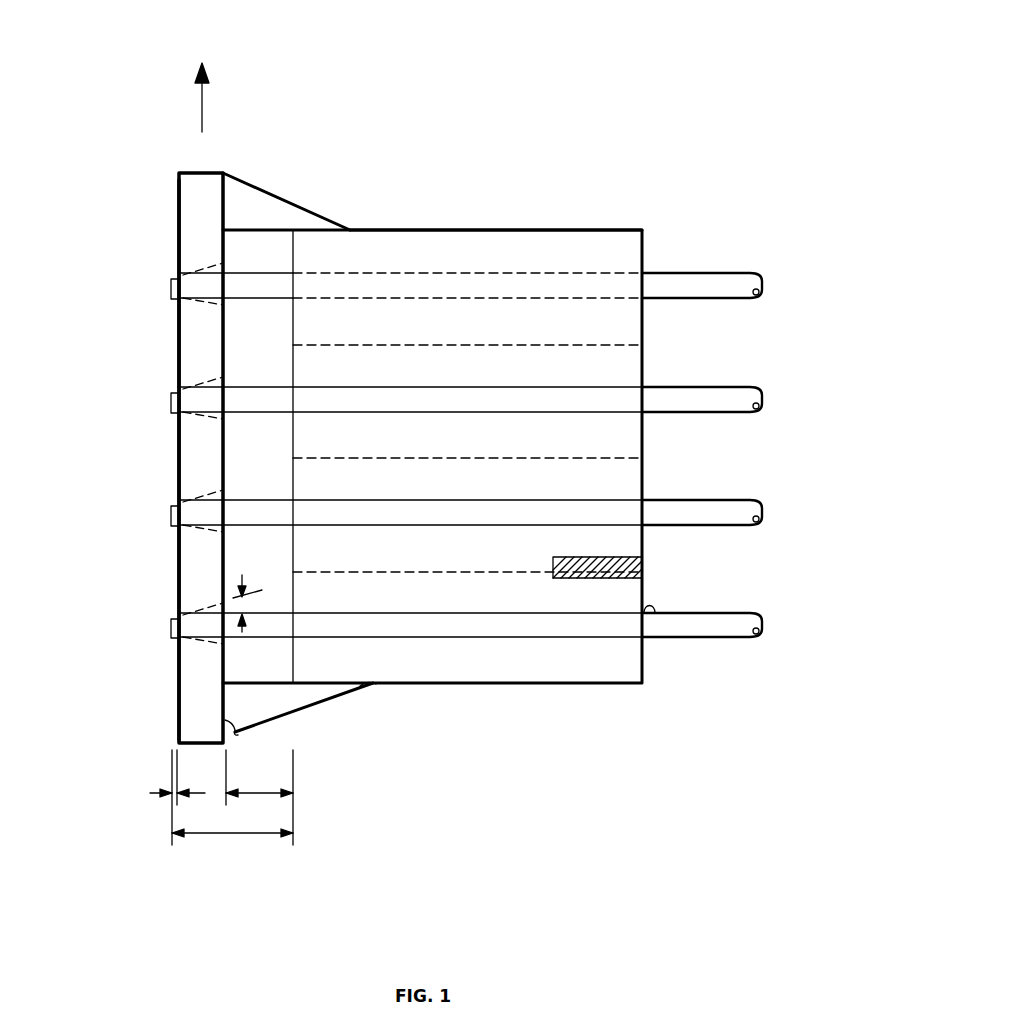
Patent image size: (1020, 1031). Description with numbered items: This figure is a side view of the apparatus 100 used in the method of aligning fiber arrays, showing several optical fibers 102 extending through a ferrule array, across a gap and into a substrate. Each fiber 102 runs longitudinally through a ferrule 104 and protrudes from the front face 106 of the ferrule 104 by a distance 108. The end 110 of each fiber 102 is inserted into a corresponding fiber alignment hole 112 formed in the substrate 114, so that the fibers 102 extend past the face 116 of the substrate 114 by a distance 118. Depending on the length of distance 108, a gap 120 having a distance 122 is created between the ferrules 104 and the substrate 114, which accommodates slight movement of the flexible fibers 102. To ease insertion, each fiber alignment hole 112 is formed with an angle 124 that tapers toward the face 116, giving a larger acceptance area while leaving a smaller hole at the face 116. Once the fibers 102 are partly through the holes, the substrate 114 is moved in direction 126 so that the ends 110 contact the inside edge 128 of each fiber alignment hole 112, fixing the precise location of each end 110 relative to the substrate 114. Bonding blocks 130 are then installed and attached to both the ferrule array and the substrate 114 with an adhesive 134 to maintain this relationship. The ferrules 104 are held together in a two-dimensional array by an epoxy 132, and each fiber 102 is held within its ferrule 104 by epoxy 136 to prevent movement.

The apparatus 100 is at (639, 98).
The optical fiber 102 is at (735, 272).
The ferrule 104 is at (583, 245).
The front face 106 is at (292, 650).
The distance 108 is at (293, 833).
The end 110 is at (170, 284).
The fiber alignment hole 112 is at (205, 305).
The substrate 114 is at (193, 196).
The face 116 is at (178, 185).
The distance 118 is at (157, 793).
The gap 120 is at (258, 250).
The distance 122 is at (293, 793).
The angle 124 is at (238, 590).
The direction 126 is at (202, 100).
The inside edge 128 is at (175, 300).
The bonding block 130 is at (245, 203).
The epoxy 132 is at (640, 568).
The adhesive 134 is at (238, 733).
The epoxy 136 is at (658, 612).